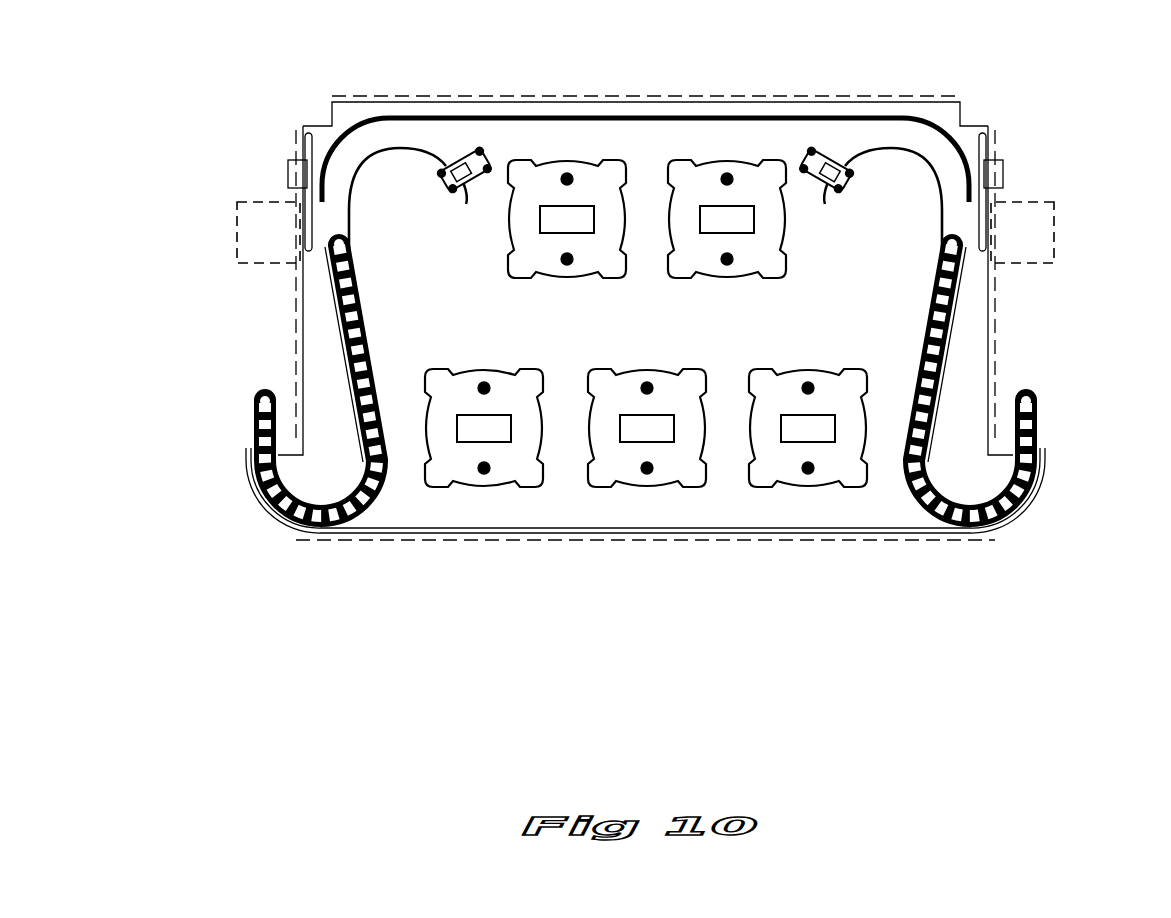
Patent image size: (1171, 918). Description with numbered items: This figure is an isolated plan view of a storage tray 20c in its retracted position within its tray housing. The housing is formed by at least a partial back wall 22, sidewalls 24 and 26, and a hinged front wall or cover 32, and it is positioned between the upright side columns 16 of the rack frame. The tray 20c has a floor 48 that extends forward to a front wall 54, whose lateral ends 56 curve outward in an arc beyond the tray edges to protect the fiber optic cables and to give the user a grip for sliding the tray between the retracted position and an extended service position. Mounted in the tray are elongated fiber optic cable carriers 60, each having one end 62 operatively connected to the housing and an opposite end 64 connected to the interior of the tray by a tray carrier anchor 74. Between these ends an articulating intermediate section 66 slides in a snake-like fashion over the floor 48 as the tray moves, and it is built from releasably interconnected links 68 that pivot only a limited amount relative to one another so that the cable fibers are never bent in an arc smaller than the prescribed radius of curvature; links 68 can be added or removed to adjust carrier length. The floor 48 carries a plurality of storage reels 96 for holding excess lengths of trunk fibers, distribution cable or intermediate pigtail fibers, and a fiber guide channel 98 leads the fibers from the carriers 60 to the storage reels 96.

The storage tray 20c is at (716, 100).
The back wall 22 is at (905, 97).
The sidewall 24 is at (1000, 370).
The sidewall 26 is at (292, 355).
The hinged front wall or cover 32 is at (816, 546).
The upright side column 16 is at (238, 240).
The floor 48 is at (838, 324).
The front wall 54 is at (673, 537).
The lateral ends 56 is at (252, 497).
The fiber optic cable carrier 60 is at (378, 347).
The carrier end 62 is at (259, 399).
The opposite carrier end 64 is at (364, 290).
The articulating intermediate section 66 is at (345, 516).
The interconnected links 68 is at (358, 480).
The tray carrier anchor 74 is at (357, 247).
The storage reels 96 is at (568, 270).
The fiber guide channel 98 is at (553, 121).